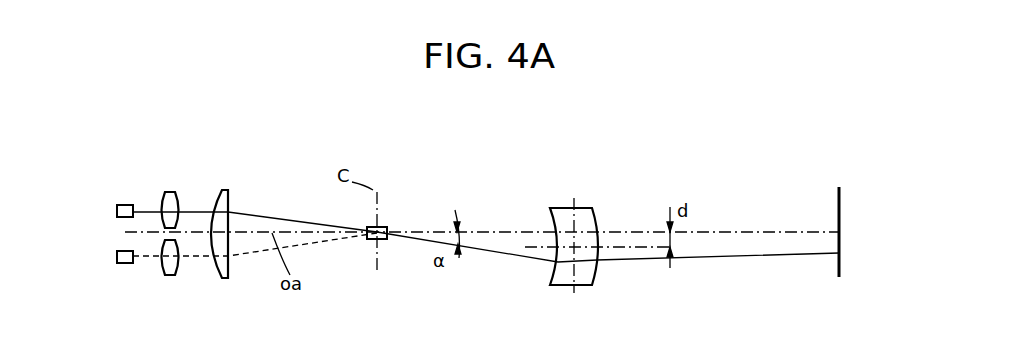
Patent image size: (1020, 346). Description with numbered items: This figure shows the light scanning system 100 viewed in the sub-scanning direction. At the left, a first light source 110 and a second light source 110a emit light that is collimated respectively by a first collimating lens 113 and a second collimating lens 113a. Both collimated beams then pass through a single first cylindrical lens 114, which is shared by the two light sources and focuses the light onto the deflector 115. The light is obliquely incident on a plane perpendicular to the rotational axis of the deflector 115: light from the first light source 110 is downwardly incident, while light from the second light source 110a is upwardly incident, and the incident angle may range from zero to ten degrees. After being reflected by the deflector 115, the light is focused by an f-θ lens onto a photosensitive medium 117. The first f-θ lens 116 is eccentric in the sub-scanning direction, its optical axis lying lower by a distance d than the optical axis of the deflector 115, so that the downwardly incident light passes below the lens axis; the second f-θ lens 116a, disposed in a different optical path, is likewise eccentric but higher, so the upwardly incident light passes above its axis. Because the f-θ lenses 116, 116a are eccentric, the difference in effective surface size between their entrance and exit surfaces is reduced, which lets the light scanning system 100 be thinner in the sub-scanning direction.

The light scanning system 100 is at (813, 117).
The first light source 110 is at (125, 205).
The second light source 110a is at (123, 263).
The first collimating lens 113 is at (165, 192).
The second collimating lens 113a is at (170, 275).
The first cylindrical lens 114 is at (225, 187).
The deflector 115 is at (387, 228).
The first f-θ lens 116 is at (606, 217).
The second f-θ lens 116a is at (588, 208).
The first photosensitive medium 117 is at (796, 215).